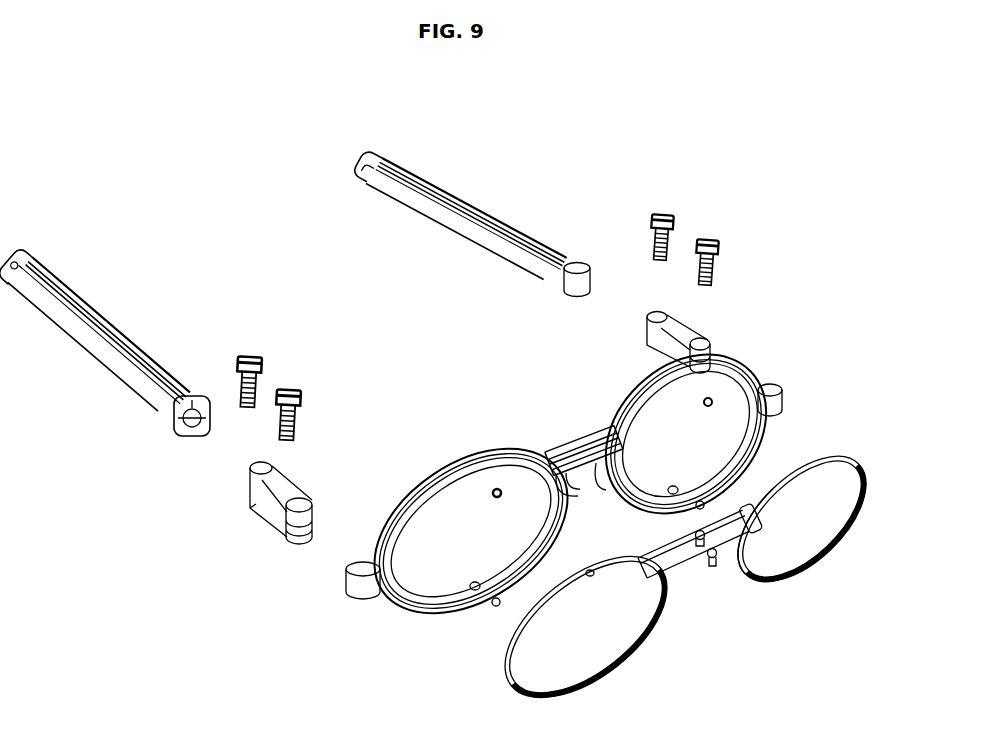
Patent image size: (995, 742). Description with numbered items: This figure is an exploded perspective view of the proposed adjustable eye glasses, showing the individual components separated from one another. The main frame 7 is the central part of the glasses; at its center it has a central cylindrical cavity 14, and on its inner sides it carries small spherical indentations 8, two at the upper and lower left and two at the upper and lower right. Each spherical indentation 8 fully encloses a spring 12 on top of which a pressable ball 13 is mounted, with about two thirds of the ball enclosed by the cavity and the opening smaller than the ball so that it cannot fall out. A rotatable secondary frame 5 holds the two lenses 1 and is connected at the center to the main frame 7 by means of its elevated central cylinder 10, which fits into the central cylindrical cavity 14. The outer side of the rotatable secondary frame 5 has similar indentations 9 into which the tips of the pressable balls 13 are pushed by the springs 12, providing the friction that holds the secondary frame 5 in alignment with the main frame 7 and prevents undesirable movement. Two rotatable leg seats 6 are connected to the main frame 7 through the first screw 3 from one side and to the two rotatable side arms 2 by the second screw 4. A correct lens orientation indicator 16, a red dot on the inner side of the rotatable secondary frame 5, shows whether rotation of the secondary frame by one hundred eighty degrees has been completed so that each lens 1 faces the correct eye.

The lens 1 is at (602, 637).
The rotatable side arm 2 is at (125, 345).
The first screw 3 is at (293, 388).
The second screw 4 is at (252, 355).
The rotatable secondary frame 5 is at (677, 553).
The rotatable leg seat 6 is at (277, 510).
The main frame 7 is at (437, 483).
The spherical indentation 8 is at (472, 593).
The indentation 9 is at (808, 463).
The elevated central cylinder 10 is at (717, 528).
The spring 12 is at (495, 608).
The pressable ball 13 is at (497, 498).
The central cylindrical cavity 14 is at (578, 465).
The correct lens orientation indicator 16 is at (713, 560).